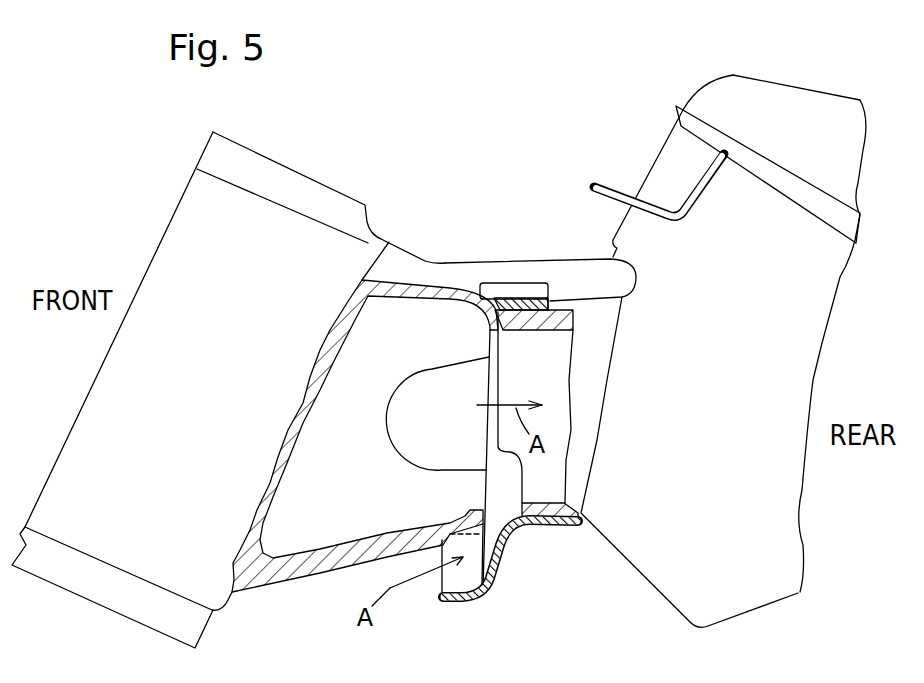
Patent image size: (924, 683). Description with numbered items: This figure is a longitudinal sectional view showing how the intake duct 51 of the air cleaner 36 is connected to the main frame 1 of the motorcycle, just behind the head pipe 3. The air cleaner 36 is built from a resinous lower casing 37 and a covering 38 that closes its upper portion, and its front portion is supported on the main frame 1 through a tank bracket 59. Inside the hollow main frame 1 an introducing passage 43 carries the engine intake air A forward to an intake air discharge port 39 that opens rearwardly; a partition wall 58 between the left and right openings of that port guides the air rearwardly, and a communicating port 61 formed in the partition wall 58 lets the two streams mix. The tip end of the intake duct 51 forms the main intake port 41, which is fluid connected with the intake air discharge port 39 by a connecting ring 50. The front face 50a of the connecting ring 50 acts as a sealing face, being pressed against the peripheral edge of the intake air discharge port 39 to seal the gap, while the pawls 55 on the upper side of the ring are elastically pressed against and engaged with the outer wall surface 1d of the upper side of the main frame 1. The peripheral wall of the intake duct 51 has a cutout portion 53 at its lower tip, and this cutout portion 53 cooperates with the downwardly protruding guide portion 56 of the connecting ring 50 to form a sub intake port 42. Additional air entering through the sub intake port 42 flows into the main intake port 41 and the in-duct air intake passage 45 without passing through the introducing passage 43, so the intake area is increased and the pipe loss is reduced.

The main frame 1 is at (335, 565).
The outer wall surface 1d is at (497, 316).
The head pipe 3 is at (180, 232).
The air cleaner 36 is at (683, 83).
The lower casing 37 is at (797, 333).
The covering 38 is at (803, 112).
The intake air discharge port 39 is at (433, 393).
The main intake port 41 is at (490, 394).
The sub intake port 42 is at (465, 571).
The introducing passage 43 is at (356, 507).
The in-duct air intake passage 45 is at (555, 433).
The connecting ring 50 is at (558, 524).
The front face 50a is at (489, 354).
The intake duct 51 is at (556, 318).
The cutout portion 53 is at (505, 540).
The pawls 55 is at (510, 283).
The guide portion 56 is at (522, 477).
The partition wall 58 is at (365, 360).
The tank bracket 59 is at (616, 186).
The communicating port 61 is at (320, 368).